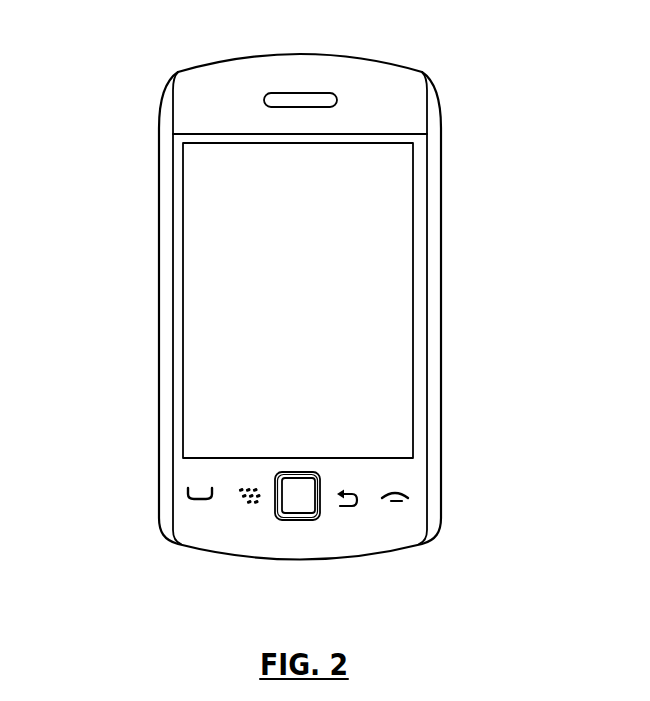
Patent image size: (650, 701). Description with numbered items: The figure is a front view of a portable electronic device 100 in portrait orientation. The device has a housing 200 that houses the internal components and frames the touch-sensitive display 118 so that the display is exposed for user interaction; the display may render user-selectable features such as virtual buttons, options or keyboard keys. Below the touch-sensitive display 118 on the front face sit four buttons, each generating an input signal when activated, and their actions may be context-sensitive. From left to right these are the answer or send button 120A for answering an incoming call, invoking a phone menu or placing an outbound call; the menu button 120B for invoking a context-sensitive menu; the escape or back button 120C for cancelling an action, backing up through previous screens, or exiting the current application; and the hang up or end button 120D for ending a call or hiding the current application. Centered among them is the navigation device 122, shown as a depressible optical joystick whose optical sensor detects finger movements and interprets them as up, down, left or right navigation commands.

The portable electronic device 100 is at (478, 86).
The housing 200 is at (433, 212).
The touch-sensitive display 118 is at (400, 307).
The navigation device 122 is at (298, 522).
The answer button 120A is at (202, 502).
The menu button 120B is at (250, 508).
The escape button 120C is at (345, 510).
The hang up button 120D is at (395, 507).